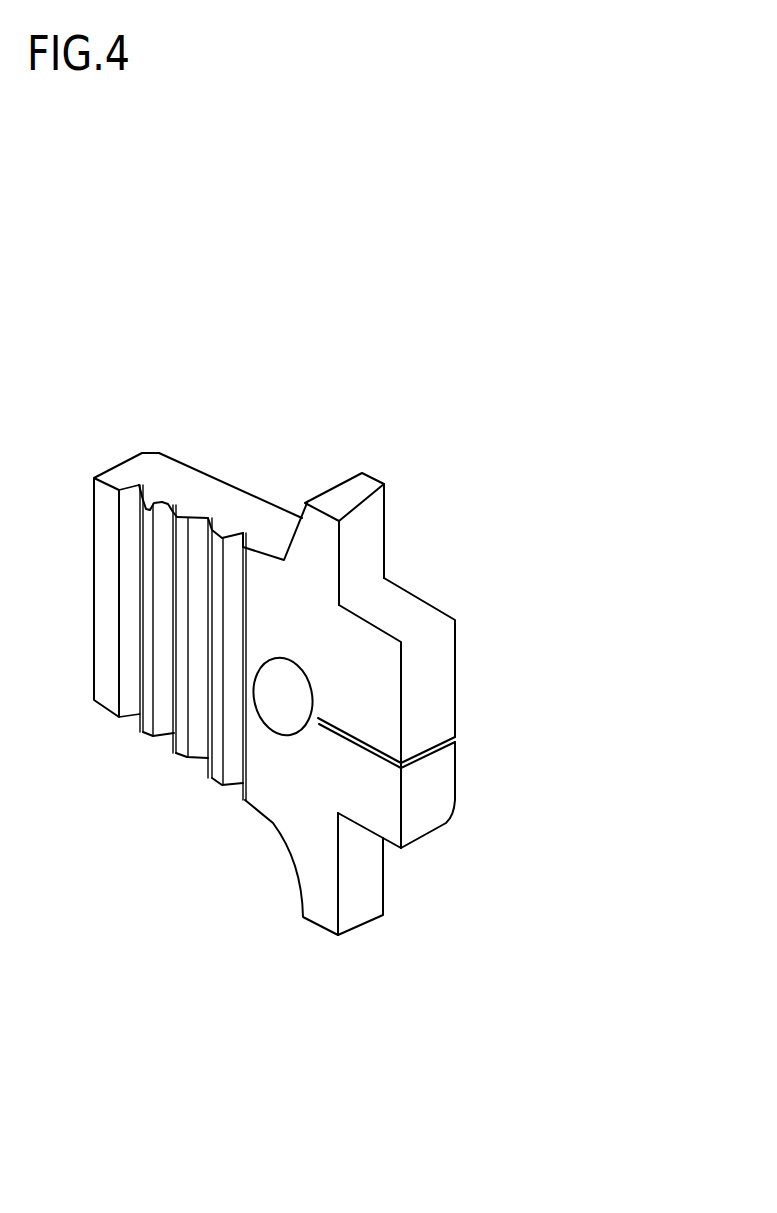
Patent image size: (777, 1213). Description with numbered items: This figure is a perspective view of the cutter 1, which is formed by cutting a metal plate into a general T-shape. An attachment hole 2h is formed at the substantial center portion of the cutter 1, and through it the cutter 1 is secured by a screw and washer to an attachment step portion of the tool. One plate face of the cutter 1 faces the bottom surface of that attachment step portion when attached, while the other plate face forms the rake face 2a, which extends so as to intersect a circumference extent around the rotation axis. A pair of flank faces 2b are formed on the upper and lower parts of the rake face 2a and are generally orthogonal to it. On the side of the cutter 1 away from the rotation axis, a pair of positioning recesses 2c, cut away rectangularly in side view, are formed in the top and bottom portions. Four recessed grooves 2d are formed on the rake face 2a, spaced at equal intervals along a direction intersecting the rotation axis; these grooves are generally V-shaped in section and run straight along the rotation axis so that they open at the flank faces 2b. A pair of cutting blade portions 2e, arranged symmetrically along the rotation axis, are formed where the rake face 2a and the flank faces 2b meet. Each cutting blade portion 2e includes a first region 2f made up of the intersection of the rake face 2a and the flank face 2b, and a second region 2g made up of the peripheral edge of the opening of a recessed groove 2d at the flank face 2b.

The cutter 1 is at (533, 455).
The rake face 2a is at (358, 787).
The flank face 2b is at (147, 478).
The positioning recess 2c is at (366, 558).
The recessed groove 2d is at (130, 715).
The cutting blade portion 2e is at (303, 326).
The first region 2f is at (152, 506).
The second region 2g is at (176, 504).
The attachment hole 2h is at (286, 731).